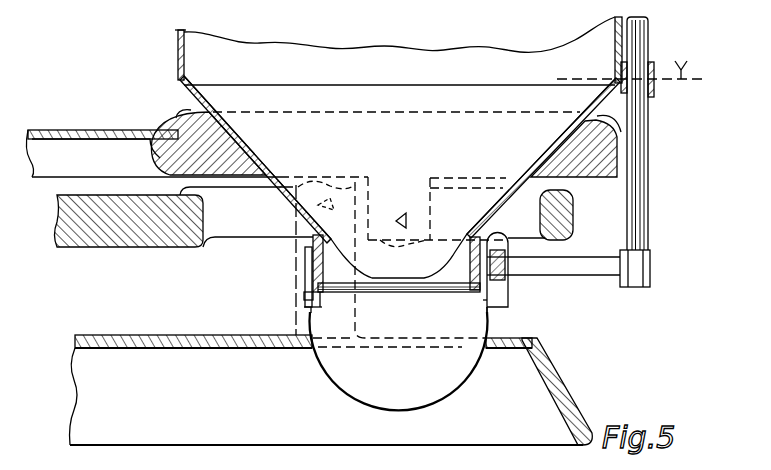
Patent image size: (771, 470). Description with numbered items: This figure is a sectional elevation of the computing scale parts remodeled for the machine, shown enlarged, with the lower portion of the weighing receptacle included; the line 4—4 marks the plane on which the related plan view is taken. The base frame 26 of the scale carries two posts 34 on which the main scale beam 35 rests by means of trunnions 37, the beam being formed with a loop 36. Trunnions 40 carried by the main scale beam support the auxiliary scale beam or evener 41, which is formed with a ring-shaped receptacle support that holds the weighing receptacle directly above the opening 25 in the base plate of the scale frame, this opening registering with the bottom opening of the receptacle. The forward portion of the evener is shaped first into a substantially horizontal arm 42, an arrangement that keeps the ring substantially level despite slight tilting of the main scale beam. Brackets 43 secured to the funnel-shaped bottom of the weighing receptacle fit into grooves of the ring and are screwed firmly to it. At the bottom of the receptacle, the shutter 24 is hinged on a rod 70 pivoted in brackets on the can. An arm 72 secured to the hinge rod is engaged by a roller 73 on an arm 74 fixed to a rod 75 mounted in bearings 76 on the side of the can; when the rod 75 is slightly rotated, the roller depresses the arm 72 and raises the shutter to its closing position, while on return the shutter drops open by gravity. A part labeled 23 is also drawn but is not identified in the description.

The hopper wall 23 is at (178, 52).
The shutter 24 is at (443, 395).
The opening 25 is at (491, 351).
The base frame 26 is at (557, 391).
The posts 34 is at (305, 281).
The main scale beam 35 is at (165, 248).
The loop 36 is at (581, 217).
The trunnions 37 is at (334, 204).
The trunnions 40 is at (404, 221).
The auxiliary scale beam 41 is at (574, 159).
The horizontal arm 42 is at (153, 140).
The brackets 43 is at (187, 112).
The rod 70 is at (510, 298).
The arm 72 is at (509, 248).
The roller 73 is at (483, 289).
The arm 74 is at (585, 278).
The rod 75 is at (649, 227).
The bearings 76 is at (654, 63).
The section line 4 is at (635, 75).